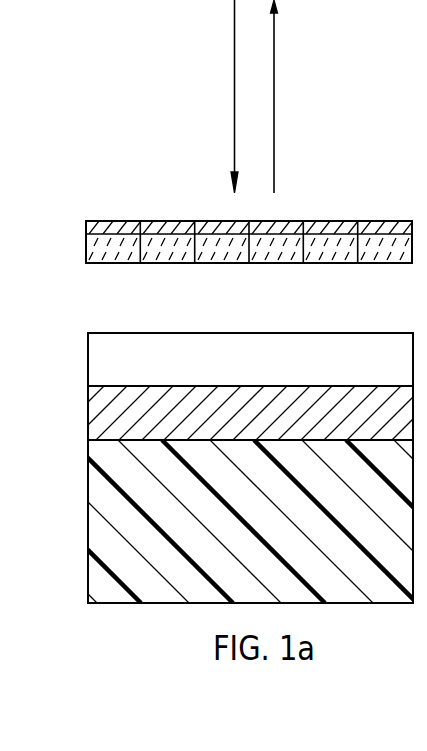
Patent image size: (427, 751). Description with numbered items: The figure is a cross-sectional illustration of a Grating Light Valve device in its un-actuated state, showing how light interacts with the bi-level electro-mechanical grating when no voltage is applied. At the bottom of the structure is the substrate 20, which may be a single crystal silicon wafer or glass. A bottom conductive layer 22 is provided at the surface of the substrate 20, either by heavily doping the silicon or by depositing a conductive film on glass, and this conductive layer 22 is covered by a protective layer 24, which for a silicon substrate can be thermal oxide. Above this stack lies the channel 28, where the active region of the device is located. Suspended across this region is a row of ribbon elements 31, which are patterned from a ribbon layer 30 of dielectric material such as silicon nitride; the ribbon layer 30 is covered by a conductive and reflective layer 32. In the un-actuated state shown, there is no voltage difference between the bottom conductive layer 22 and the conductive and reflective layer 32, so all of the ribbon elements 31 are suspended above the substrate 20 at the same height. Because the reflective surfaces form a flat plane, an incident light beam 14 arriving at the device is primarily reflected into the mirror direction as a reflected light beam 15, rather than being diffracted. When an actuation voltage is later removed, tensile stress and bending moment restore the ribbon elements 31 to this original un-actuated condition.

The incident light beam 14 is at (234, 55).
The reflected light beam 15 is at (276, 53).
The substrate 20 is at (101, 492).
The bottom conductive layer 22 is at (95, 422).
The protective layer 24 is at (93, 366).
The channel 28 is at (218, 246).
The ribbon layer 30 is at (86, 250).
The ribbon elements 31 is at (200, 267).
The conductive and reflective layer 32 is at (102, 222).